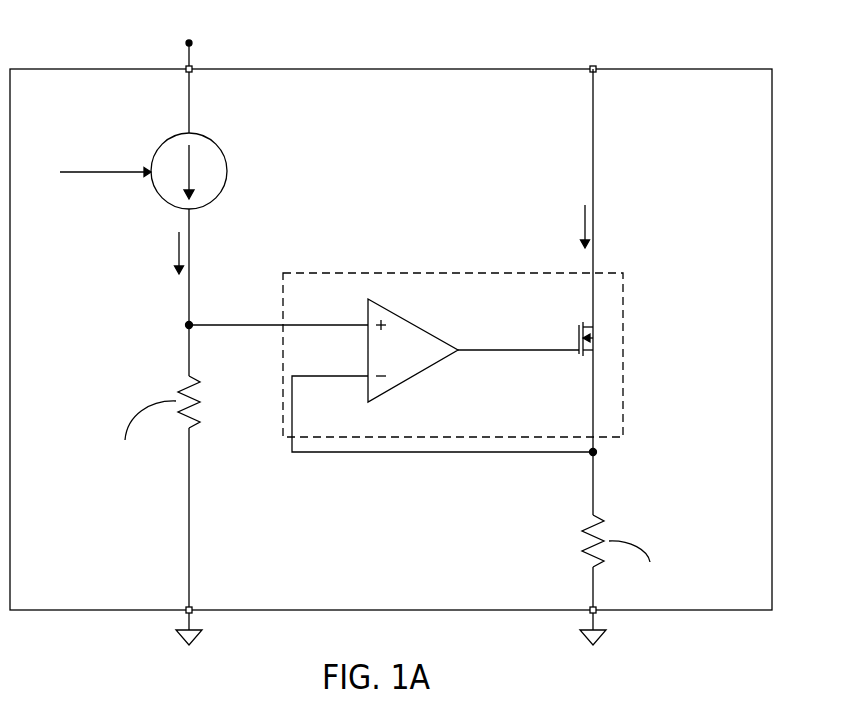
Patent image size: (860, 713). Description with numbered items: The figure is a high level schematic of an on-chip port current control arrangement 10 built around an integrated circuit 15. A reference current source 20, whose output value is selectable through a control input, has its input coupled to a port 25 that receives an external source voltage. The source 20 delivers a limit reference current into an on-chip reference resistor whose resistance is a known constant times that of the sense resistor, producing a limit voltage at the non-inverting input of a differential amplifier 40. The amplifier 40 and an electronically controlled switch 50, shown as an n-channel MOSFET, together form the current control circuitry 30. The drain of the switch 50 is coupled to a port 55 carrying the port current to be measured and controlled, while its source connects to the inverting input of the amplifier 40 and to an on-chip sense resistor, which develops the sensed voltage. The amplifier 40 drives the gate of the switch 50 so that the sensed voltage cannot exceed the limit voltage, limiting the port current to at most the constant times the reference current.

The on-chip port current control arrangement 10 is at (690, 40).
The integrated circuit 15 is at (772, 197).
The reference current source 20 is at (206, 135).
The port 25 is at (192, 67).
The current control circuitry 30 is at (445, 272).
The differential amplifier 40 is at (413, 323).
The electronically controlled switch 50 is at (586, 355).
The port 55 is at (592, 67).